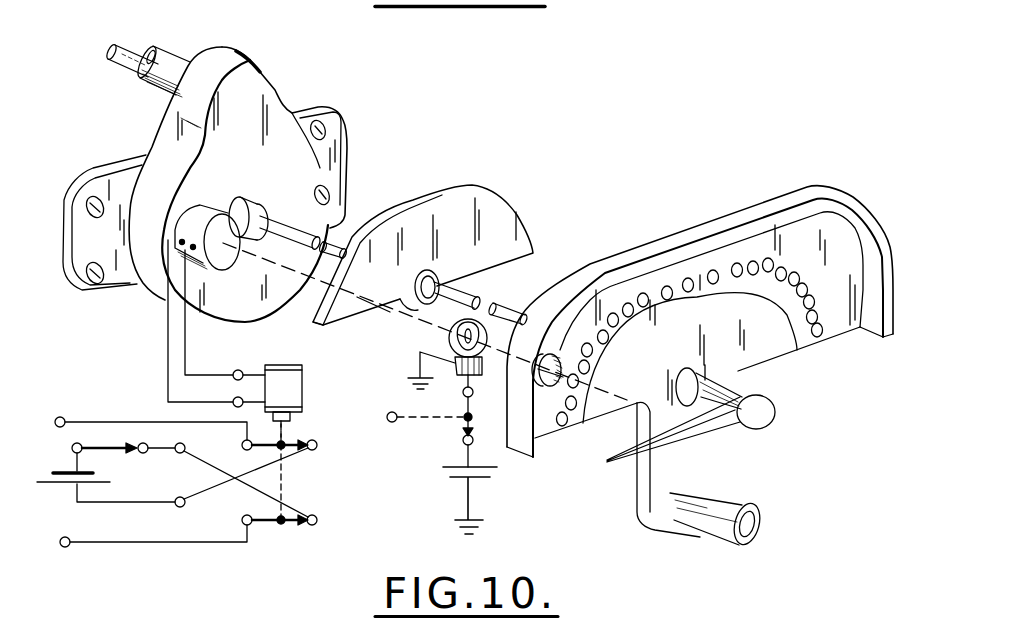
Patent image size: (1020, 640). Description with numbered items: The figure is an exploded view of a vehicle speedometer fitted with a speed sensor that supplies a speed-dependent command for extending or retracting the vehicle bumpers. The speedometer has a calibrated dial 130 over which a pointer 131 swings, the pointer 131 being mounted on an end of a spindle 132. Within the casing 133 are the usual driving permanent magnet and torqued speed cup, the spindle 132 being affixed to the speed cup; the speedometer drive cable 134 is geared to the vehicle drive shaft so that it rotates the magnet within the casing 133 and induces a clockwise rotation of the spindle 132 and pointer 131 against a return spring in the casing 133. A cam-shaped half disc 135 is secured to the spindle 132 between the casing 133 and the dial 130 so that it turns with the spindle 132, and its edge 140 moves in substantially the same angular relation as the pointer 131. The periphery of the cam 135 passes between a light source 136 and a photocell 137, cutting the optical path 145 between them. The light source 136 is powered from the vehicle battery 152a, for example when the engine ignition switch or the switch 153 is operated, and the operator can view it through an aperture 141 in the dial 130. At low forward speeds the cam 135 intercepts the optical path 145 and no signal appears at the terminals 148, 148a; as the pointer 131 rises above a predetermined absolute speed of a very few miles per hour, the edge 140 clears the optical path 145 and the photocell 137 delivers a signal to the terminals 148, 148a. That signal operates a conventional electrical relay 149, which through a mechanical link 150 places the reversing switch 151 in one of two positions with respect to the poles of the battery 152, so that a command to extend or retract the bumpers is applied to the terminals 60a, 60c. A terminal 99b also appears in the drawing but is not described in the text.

The calibrated dial 130 is at (847, 327).
The pointer 131 is at (742, 427).
The spindle 132 is at (325, 230).
The casing 133 is at (279, 84).
The speedometer drive cable 134 is at (118, 48).
The cam-shaped half disc 135 is at (500, 195).
The light source 136 is at (450, 343).
The photocell 137 is at (173, 237).
The edge of the cam 140 is at (314, 323).
The aperture 141 is at (550, 387).
The optical path 145 is at (357, 297).
The terminal 148 is at (238, 370).
The terminal 148a is at (235, 399).
The electrical relay 149 is at (303, 392).
The mechanical link 150 is at (283, 484).
The reversing switch 151 is at (266, 532).
The battery 152 is at (110, 483).
The vehicle battery 152a is at (493, 478).
The switch 153 is at (464, 418).
The terminal 60a is at (58, 417).
The terminal 60c is at (65, 548).
The terminal 99b is at (390, 422).